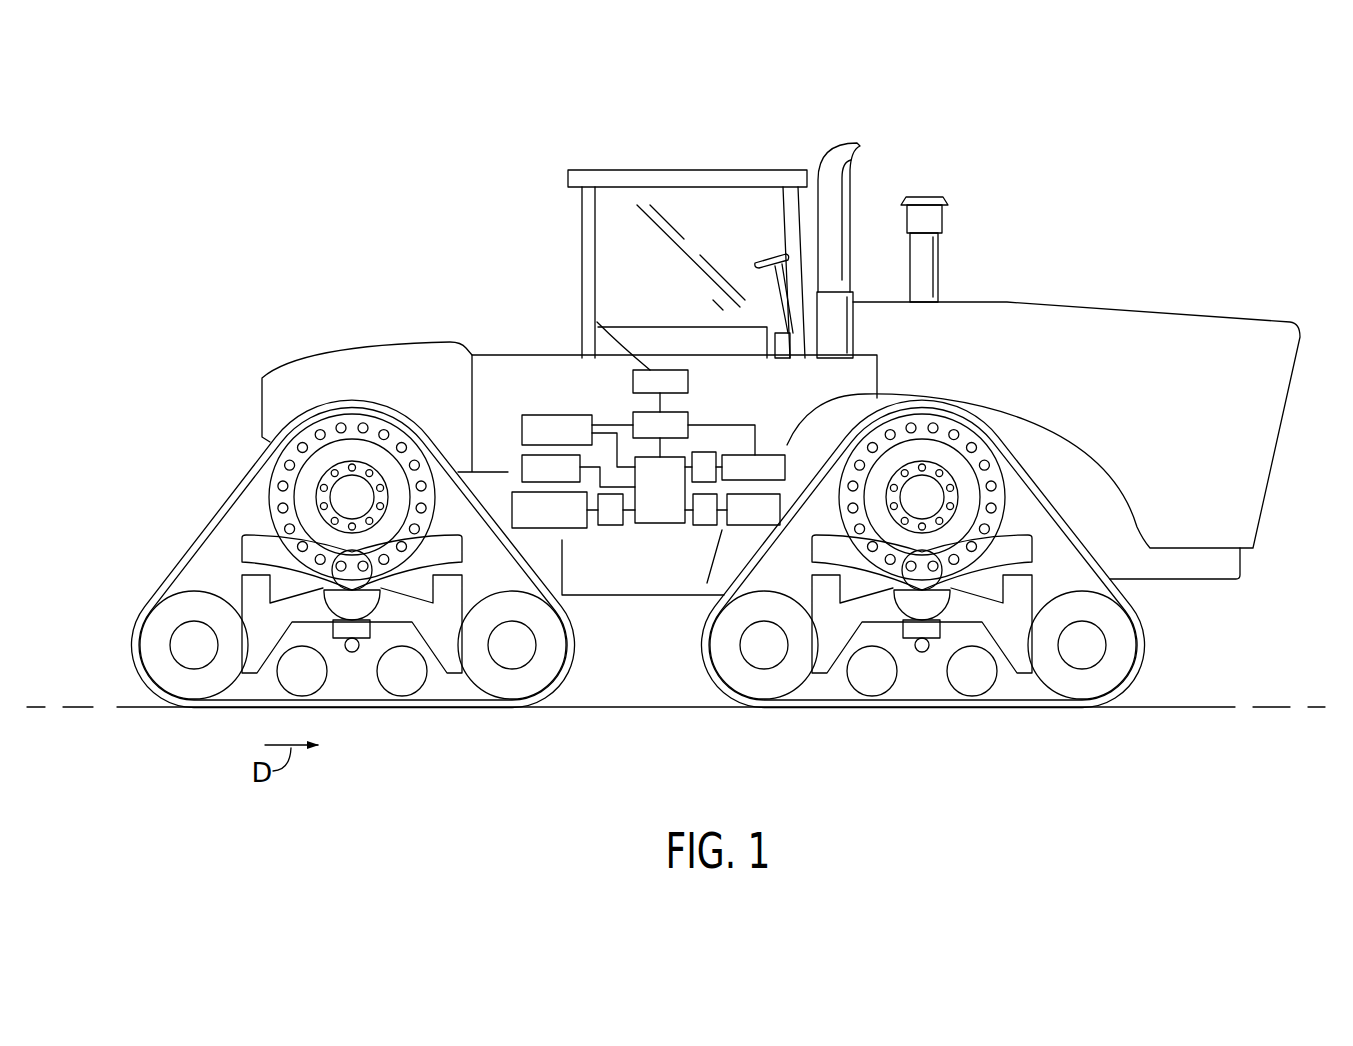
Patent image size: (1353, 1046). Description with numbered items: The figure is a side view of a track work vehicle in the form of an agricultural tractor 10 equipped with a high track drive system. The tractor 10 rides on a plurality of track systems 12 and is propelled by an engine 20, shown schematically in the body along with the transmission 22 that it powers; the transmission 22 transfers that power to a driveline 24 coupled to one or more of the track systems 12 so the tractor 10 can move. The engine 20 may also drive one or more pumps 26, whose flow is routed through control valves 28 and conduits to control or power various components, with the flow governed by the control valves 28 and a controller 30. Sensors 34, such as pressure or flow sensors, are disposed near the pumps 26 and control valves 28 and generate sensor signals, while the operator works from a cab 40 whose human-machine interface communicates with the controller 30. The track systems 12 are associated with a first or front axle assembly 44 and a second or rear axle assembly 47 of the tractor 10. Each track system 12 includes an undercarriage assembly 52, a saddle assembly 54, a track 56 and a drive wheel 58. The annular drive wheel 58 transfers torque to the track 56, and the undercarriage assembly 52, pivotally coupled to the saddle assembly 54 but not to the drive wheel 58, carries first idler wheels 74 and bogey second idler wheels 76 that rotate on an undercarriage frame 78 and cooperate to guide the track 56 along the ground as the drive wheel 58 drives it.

The tractor 10 is at (1063, 188).
The track systems 12 is at (95, 580).
The engine 20 is at (767, 455).
The transmission 22 is at (660, 524).
The driveline 24 is at (612, 525).
The pumps 26 is at (522, 466).
The control valves 28 is at (522, 428).
The controller 30 is at (645, 412).
The sensors 34 is at (693, 358).
The cab 40 is at (703, 170).
The front axle assembly 44 is at (786, 447).
The rear axle assembly 47 is at (565, 528).
The undercarriage assembly 52 is at (1048, 585).
The saddle assembly 54 is at (1008, 520).
The track 56 is at (1143, 648).
The drive wheel 58 is at (975, 427).
The first idler wheels 74 is at (757, 688).
The second idler wheels 76 is at (867, 683).
The undercarriage frame 78 is at (1007, 647).